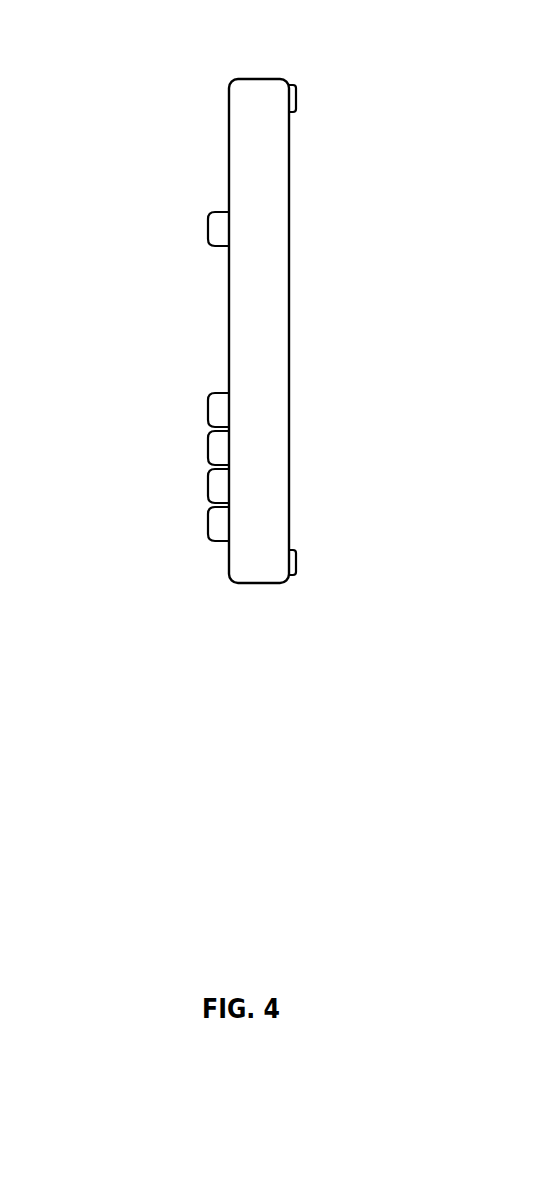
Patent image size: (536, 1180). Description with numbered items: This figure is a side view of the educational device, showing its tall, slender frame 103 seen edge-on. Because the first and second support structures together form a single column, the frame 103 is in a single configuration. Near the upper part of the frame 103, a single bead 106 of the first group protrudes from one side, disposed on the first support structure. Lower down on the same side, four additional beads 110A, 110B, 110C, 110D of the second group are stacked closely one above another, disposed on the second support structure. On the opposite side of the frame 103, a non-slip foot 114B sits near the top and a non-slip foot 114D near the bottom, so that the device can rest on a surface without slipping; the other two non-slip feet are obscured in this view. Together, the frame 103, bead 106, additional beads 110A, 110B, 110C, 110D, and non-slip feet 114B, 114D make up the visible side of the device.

The frame 103 is at (243, 58).
The bead 106 is at (205, 226).
The additional bead 110A is at (205, 408).
The additional bead 110B is at (205, 450).
The additional bead 110C is at (205, 490).
The additional bead 110D is at (205, 530).
The non-slip foot 114B is at (300, 92).
The non-slip foot 114D is at (302, 563).